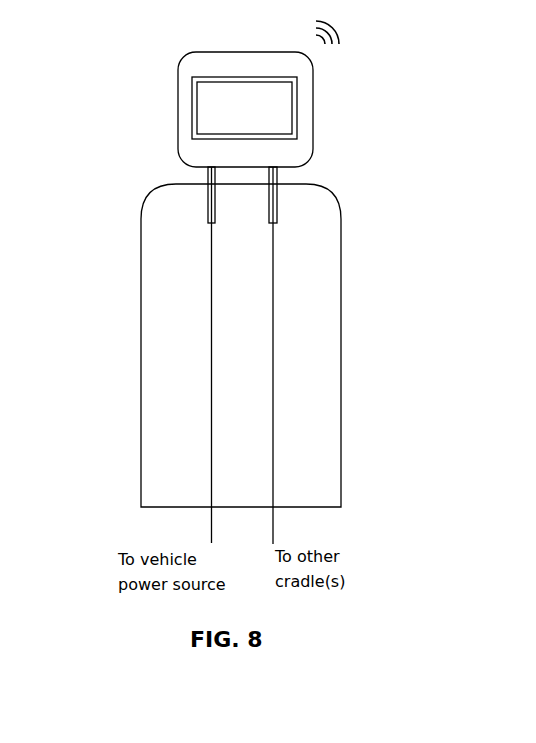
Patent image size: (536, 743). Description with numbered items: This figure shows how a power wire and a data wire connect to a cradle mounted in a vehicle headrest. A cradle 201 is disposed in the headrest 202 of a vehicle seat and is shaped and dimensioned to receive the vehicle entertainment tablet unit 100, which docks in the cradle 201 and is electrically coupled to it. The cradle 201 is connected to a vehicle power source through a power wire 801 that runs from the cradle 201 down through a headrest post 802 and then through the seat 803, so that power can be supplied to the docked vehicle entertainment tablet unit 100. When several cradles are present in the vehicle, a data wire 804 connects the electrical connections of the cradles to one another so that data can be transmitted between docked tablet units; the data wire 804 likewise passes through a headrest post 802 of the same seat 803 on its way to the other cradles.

The vehicle entertainment tablet unit 100 is at (203, 118).
The cradle 201 is at (294, 138).
The headrest 202 is at (221, 56).
The power wire 801 is at (210, 366).
The headrest post 802 is at (208, 212).
The seat 803 is at (337, 293).
The data wire 804 is at (272, 455).